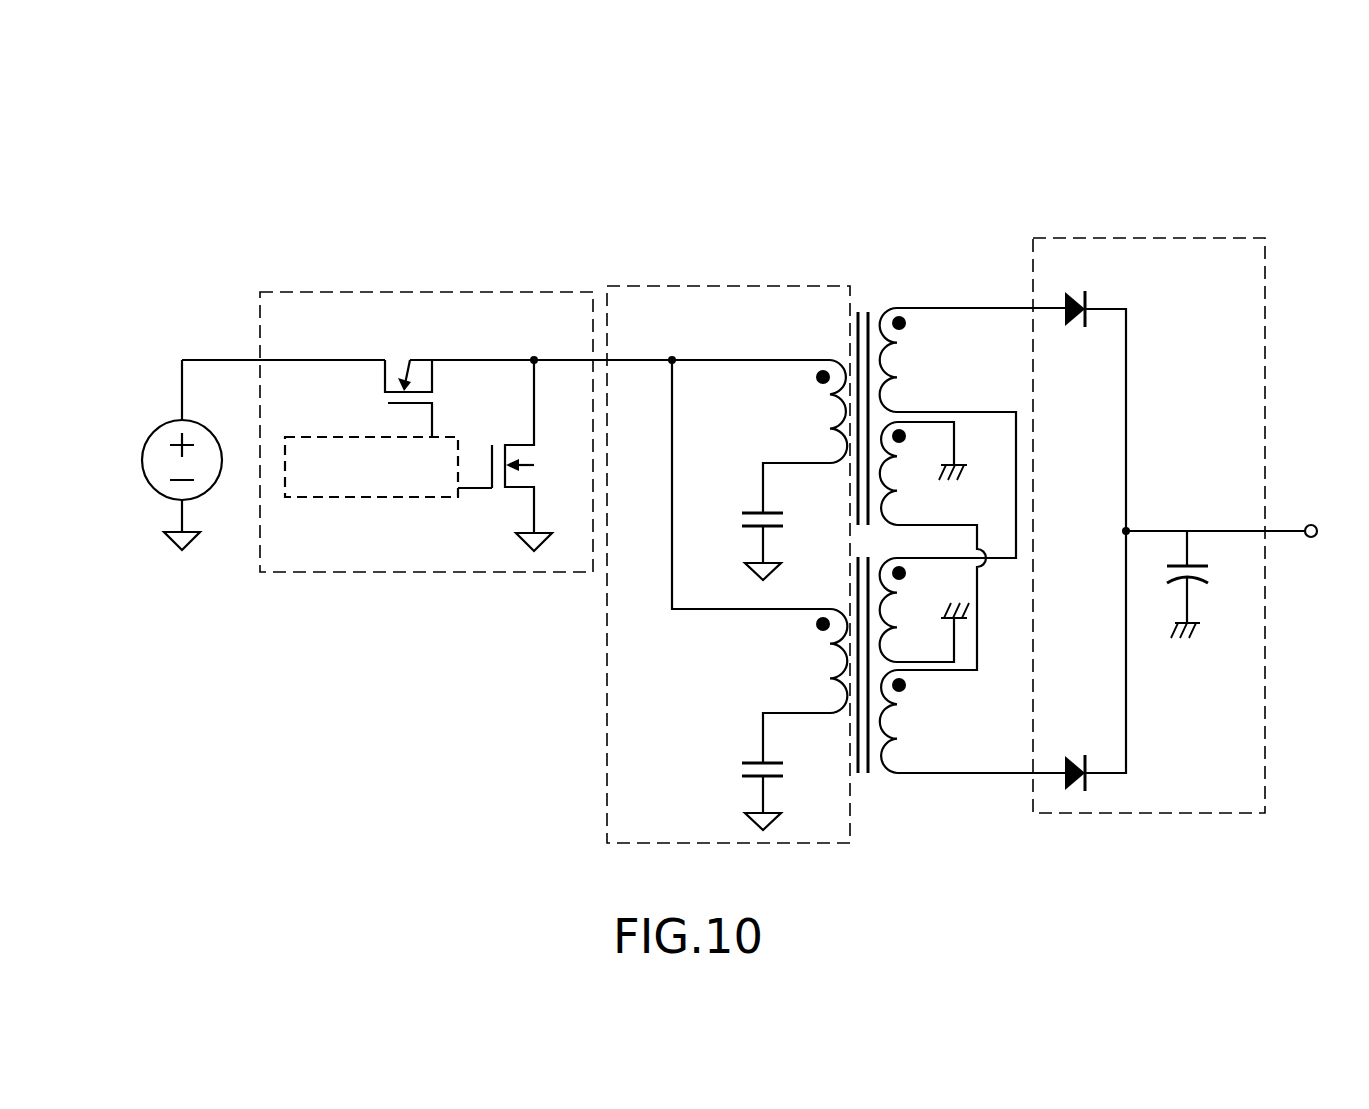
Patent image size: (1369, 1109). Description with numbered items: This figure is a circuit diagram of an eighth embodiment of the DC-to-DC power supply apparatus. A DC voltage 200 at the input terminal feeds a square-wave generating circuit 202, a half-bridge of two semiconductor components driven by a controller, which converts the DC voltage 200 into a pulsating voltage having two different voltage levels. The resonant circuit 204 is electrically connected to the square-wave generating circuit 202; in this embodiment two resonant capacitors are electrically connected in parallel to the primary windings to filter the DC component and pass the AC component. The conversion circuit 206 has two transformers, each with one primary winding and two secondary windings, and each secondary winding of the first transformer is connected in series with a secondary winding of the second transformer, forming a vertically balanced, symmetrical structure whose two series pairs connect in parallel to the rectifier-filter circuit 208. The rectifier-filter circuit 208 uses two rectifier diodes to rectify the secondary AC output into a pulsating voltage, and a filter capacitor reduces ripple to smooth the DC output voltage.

The DC voltage 200 is at (143, 458).
The square-wave generating circuit 202 is at (386, 292).
The resonant circuit 204 is at (698, 285).
The conversion circuit 206 is at (893, 270).
The rectifier-filter circuit 208 is at (1150, 238).